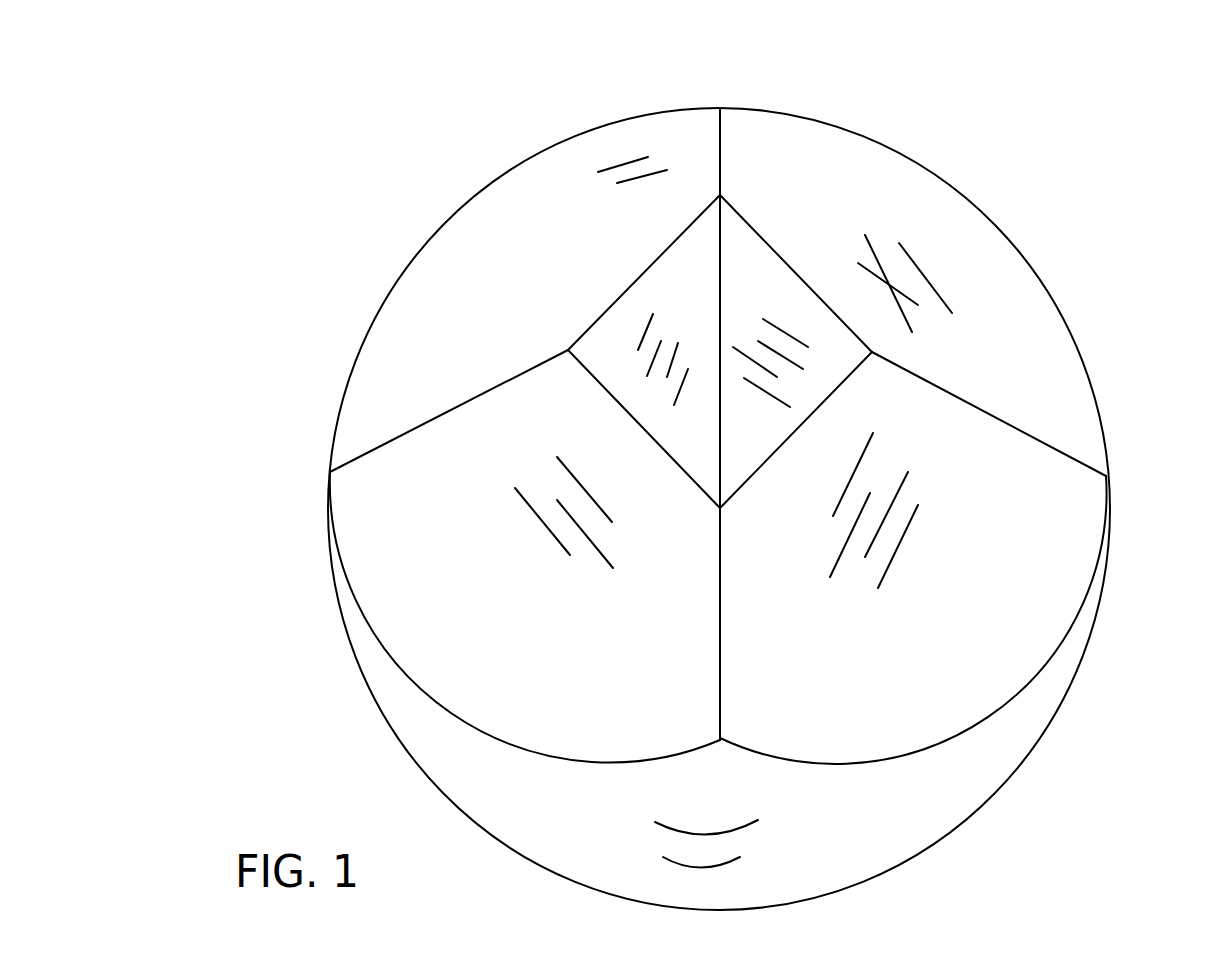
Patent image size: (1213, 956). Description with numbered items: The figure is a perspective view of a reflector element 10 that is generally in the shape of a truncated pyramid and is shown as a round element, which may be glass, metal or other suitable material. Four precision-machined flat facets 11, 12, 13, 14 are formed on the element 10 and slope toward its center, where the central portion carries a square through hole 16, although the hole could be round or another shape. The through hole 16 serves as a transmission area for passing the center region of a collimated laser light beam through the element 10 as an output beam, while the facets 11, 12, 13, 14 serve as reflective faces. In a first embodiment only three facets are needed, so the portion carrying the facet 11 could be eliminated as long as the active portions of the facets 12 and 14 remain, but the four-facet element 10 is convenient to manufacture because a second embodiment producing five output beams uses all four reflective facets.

The reflector element 10 is at (1022, 137).
The facet 11 is at (447, 273).
The facet 12 is at (973, 242).
The facet 13 is at (1007, 512).
The facet 14 is at (410, 565).
The square through hole 16 is at (692, 283).